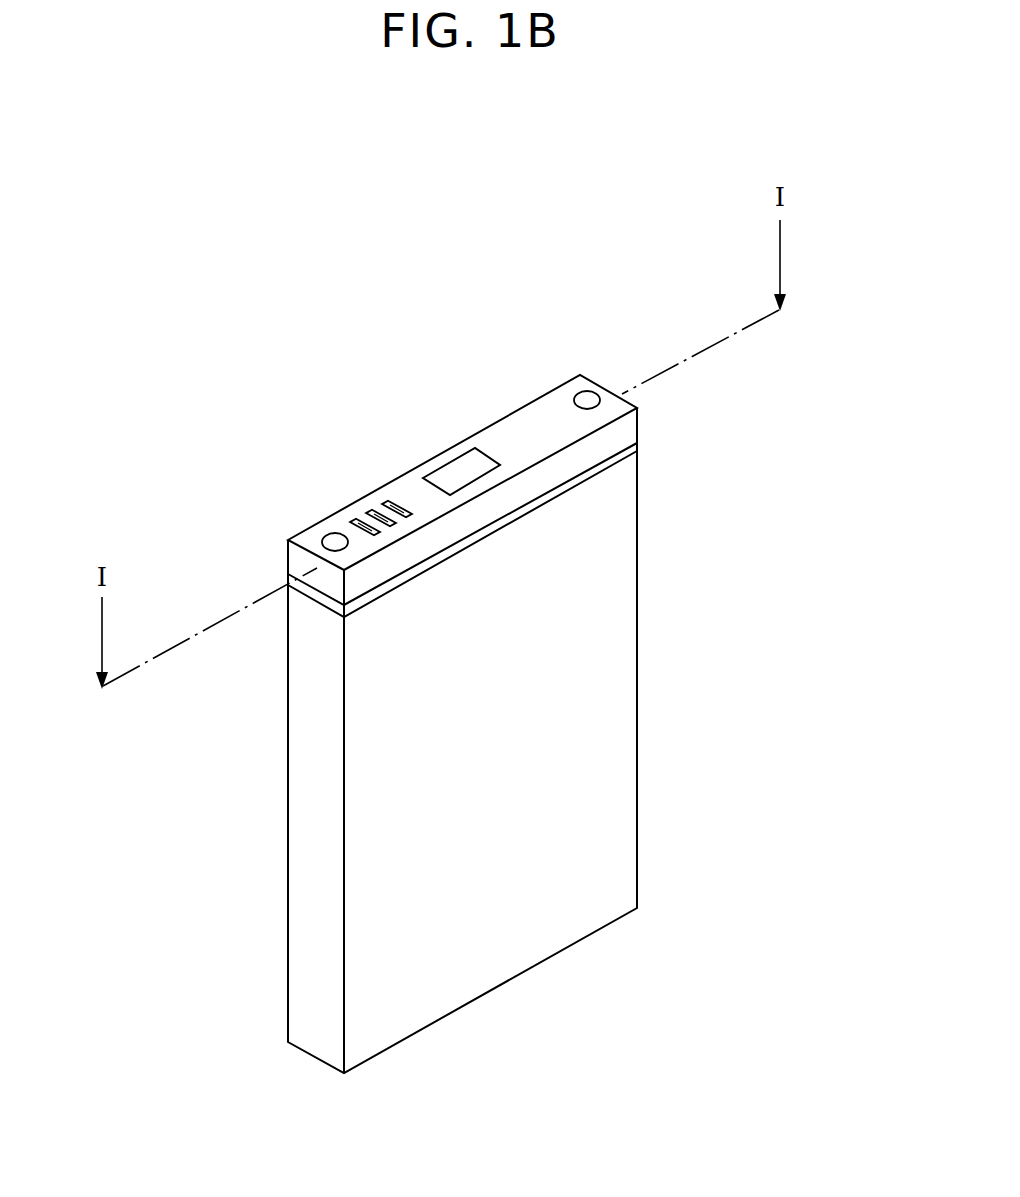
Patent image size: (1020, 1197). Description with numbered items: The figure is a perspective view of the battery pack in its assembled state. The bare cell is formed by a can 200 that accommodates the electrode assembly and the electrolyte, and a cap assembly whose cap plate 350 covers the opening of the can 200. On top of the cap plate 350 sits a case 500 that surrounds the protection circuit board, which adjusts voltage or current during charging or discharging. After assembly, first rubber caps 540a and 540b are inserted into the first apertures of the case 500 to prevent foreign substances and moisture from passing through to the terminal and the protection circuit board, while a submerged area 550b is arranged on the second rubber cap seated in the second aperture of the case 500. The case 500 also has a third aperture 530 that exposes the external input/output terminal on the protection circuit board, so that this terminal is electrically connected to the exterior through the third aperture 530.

The can 200 is at (605, 708).
The cap plate 350 is at (623, 452).
The case 500 is at (623, 430).
The third aperture 530 is at (383, 500).
The first rubber cap 540a is at (582, 398).
The first rubber cap 540b is at (333, 540).
The submerged area 550b is at (458, 470).